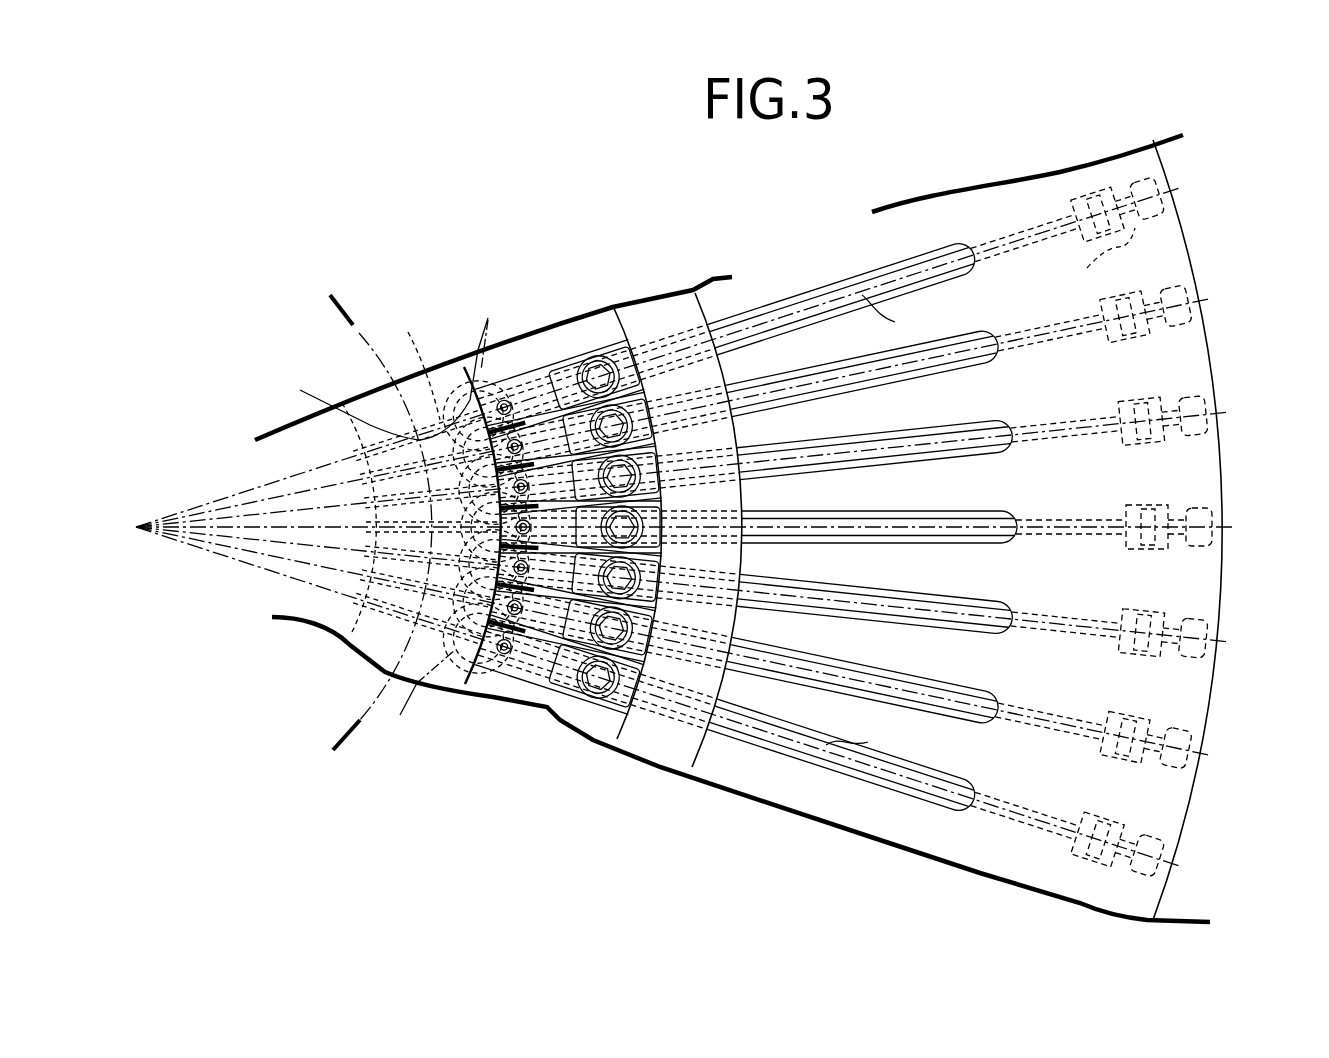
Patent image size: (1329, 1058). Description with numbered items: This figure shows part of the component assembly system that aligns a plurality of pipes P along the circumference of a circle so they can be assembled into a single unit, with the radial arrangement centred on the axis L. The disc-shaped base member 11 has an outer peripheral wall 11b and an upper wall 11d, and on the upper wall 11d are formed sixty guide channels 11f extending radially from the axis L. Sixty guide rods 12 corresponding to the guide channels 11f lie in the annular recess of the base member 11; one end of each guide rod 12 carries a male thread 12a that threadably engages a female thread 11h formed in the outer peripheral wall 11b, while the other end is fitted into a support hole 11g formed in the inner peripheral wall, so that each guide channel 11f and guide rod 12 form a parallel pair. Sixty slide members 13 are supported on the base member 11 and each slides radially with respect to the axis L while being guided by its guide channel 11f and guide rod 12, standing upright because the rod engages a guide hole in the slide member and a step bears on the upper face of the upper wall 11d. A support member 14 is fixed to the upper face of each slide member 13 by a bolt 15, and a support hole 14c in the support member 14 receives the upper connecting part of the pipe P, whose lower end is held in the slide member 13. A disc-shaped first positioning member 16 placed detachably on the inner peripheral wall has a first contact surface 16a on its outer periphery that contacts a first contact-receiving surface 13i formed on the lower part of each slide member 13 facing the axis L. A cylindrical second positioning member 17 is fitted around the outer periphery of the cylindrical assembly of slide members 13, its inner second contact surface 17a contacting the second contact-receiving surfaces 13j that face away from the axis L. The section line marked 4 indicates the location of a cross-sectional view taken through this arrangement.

The base member 11 is at (1197, 251).
The outer peripheral wall 11b is at (1210, 360).
The upper wall 11d is at (1082, 405).
The guide channel 11f is at (885, 526).
The support hole 11g is at (393, 467).
The female thread 11h is at (1100, 414).
The guide rod 12 is at (803, 292).
The male thread 12a is at (1152, 182).
The slide member 13 is at (539, 358).
The first contact-receiving surface 13i is at (373, 379).
The second contact-receiving surface 13j is at (700, 362).
The support member 14 is at (552, 694).
The support hole 14c is at (503, 663).
The bolt 15 is at (597, 372).
The first positioning member 16 is at (466, 358).
The first contact surface 16a is at (465, 675).
The second positioning member 17 is at (661, 303).
The second contact surface 17a is at (607, 733).
The axis L is at (138, 535).
The pipe P is at (444, 520).
The section line 4- 4 is at (325, 325).